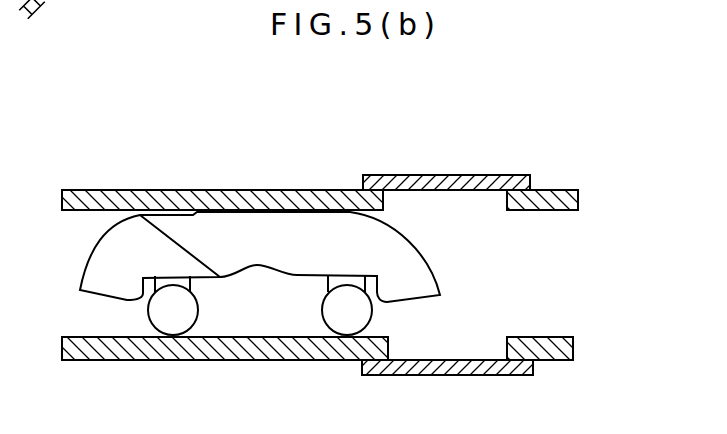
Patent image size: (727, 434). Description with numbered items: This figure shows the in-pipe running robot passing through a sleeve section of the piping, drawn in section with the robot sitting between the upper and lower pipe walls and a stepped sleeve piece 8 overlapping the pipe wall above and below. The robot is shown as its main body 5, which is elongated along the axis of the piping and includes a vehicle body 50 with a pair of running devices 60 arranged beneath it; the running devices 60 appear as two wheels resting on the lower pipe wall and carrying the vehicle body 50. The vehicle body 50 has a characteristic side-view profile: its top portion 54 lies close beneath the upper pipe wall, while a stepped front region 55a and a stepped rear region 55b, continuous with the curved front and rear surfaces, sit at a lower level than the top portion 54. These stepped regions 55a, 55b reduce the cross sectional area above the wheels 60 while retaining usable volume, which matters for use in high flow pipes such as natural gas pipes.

The main body 5 is at (250, 149).
The guide rail 8 is at (463, 174).
The vehicle body 50 is at (268, 253).
The top portion 54 is at (265, 210).
The stepped front region 55a is at (155, 213).
The stepped rear region 55b is at (349, 212).
The running devices 60 is at (185, 320).